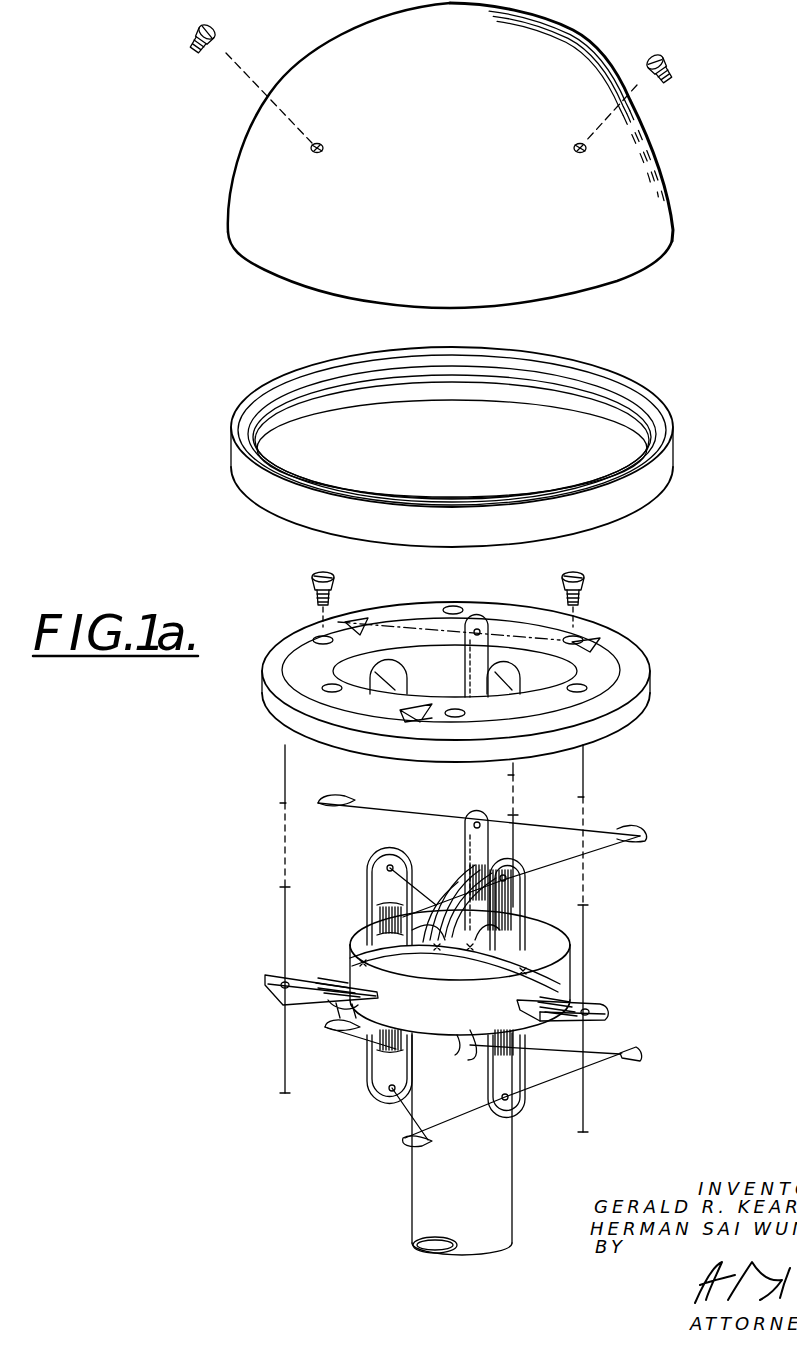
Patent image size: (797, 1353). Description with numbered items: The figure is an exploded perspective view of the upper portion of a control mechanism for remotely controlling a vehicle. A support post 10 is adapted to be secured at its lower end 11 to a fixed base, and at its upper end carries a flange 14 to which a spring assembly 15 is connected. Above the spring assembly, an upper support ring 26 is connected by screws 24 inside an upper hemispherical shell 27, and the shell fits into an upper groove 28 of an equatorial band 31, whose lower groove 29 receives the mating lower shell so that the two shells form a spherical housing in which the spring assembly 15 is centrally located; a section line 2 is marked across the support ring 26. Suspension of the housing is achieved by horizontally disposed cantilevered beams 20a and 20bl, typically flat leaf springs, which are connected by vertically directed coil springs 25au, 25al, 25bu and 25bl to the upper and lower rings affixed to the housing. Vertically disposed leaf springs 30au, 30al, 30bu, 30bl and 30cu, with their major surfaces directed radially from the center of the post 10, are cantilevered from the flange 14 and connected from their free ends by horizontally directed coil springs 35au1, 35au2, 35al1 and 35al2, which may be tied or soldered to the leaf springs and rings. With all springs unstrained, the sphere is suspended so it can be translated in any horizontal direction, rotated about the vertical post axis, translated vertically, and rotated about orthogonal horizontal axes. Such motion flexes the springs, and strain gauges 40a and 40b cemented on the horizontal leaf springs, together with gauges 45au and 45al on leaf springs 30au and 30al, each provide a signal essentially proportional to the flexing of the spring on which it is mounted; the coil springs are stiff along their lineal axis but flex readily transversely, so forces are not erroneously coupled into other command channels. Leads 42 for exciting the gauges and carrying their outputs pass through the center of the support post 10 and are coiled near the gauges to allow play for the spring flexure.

The section line 2- 2 is at (360, 646).
The support post 10 is at (412, 1212).
The lower end 11 is at (433, 1247).
The flange 14 is at (470, 1009).
The spring assembly 15 is at (597, 894).
The cantilevered beam 20a is at (262, 995).
The cantilevered beam 20bl is at (606, 1018).
The screws 24 is at (208, 48).
The coil spring 25au is at (285, 905).
The coil spring 25al is at (285, 1036).
The coil spring 25bu is at (583, 935).
The coil spring 25bl is at (583, 1098).
The upper support ring 26 is at (471, 667).
The upper hemispherical shell 27 is at (224, 222).
The upper groove 28 is at (305, 380).
The lower groove 29 is at (313, 410).
The leaf spring 30au is at (378, 850).
The leaf spring 30al is at (408, 1060).
The leaf spring 30bu is at (526, 893).
The leaf spring 30bl is at (526, 1105).
The leaf spring 30cu is at (473, 815).
The equatorial band 31 is at (495, 443).
The coil spring 35au1 is at (430, 870).
The coil spring 35au2 is at (380, 845).
The coil spring 35al1 is at (405, 1112).
The coil spring 35al2 is at (355, 1037).
The strain gauge 40a is at (322, 975).
The strain gauge 40b is at (575, 996).
The leads 42 is at (455, 968).
The strain gauge 45au is at (400, 903).
The strain gauge 45al is at (375, 1058).